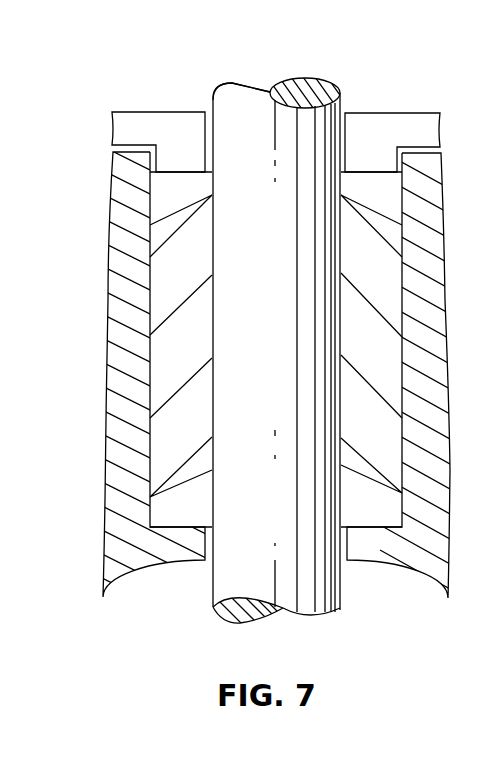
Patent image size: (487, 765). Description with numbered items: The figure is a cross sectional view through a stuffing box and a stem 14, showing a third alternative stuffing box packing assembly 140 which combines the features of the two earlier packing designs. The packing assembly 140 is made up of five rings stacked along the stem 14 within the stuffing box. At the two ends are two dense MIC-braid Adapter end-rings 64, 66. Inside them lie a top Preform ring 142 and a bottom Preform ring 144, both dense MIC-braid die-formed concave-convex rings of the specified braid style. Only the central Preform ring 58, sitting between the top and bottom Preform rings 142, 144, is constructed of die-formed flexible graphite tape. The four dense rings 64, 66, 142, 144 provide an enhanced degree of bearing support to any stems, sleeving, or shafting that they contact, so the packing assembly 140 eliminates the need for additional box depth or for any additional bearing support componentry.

The shaft 14 is at (322, 82).
The stuffing box packing assembly 140 is at (218, 78).
The central Preform ring 58 is at (167, 376).
The Adapter end-ring 64 is at (162, 203).
The top Preform ring 142 is at (162, 298).
The bottom Preform ring 144 is at (162, 442).
The Adapter end-ring 66 is at (165, 512).